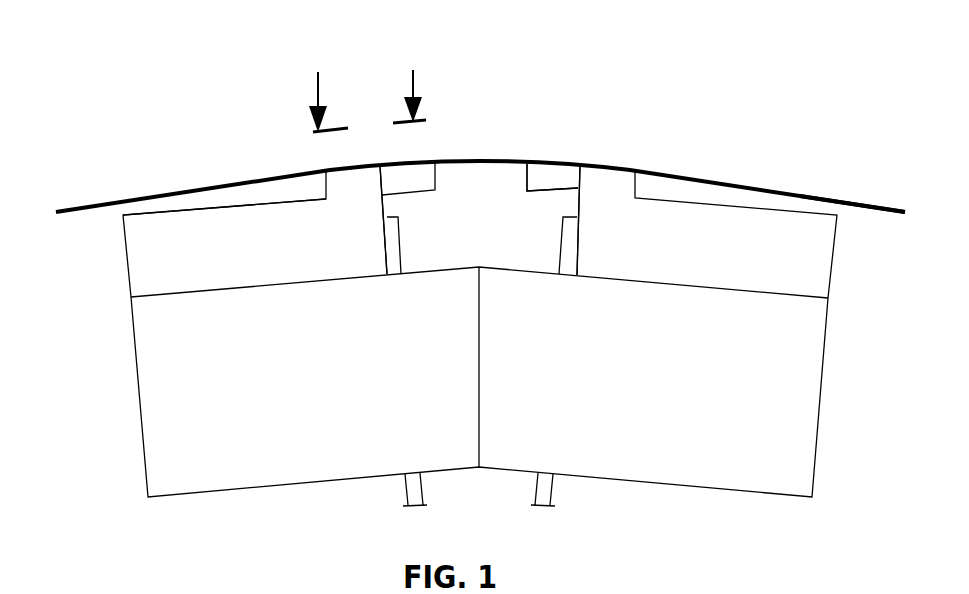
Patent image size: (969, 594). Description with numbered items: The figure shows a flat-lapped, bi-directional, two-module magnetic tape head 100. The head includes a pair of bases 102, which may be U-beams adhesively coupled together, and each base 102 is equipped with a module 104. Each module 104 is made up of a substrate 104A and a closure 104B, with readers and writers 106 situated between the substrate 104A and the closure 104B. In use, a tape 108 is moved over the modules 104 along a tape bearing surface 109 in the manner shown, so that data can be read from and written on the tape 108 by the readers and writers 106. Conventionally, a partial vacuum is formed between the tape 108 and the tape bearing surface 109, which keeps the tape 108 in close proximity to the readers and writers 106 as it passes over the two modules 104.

The magnetic tape head 100 is at (236, 113).
The base 102 is at (137, 370).
The module 104 is at (128, 263).
The substrate 104A is at (193, 240).
The closure 104B is at (522, 177).
The readers and writers 106 is at (584, 148).
The tape 108 is at (830, 197).
The tape bearing surface 109 is at (338, 157).